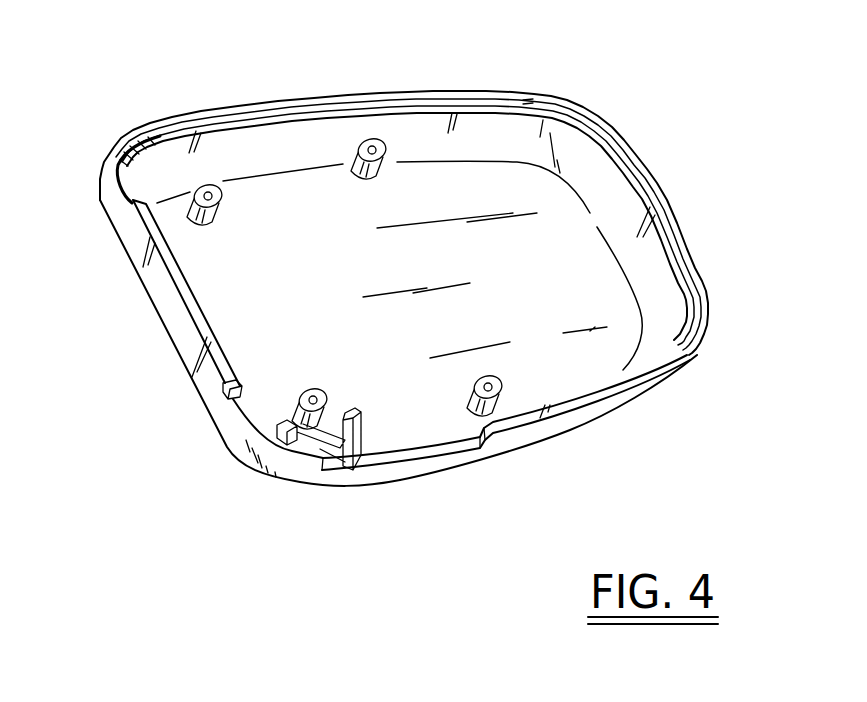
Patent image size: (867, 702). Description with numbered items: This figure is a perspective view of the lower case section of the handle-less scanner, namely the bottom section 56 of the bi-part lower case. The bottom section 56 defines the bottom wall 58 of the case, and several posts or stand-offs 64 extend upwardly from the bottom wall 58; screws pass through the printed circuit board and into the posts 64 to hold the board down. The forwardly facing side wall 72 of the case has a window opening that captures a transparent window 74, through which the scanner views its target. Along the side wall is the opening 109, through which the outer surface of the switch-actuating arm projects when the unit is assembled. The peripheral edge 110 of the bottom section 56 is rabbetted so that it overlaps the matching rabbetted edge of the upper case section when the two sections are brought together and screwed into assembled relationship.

The bottom section 56 is at (429, 92).
The bottom wall 58 is at (335, 298).
The posts or stand-offs 64 is at (222, 212).
The forwardly facing side wall 72 is at (105, 180).
The transparent window 74 is at (190, 322).
The opening 109 is at (483, 446).
The edge 110 is at (690, 353).